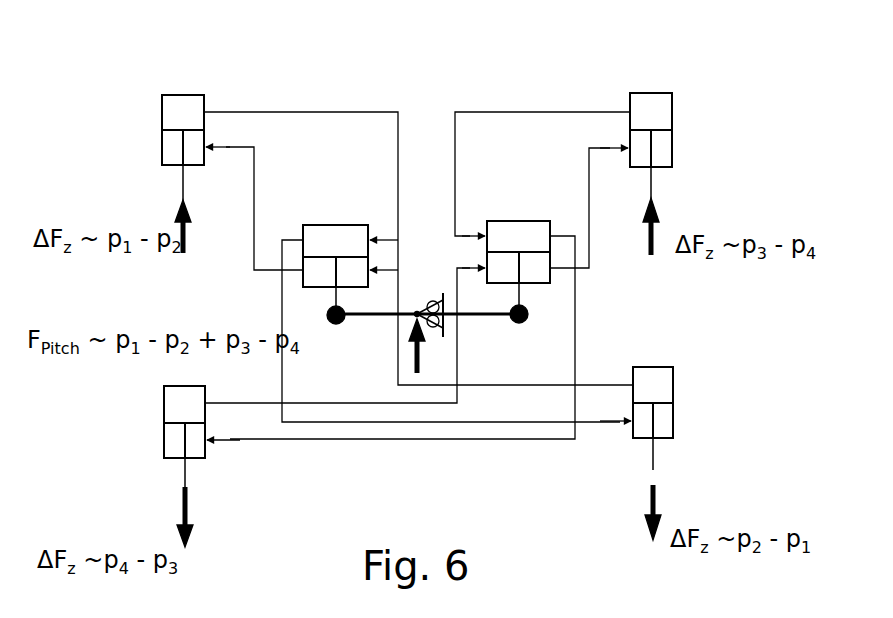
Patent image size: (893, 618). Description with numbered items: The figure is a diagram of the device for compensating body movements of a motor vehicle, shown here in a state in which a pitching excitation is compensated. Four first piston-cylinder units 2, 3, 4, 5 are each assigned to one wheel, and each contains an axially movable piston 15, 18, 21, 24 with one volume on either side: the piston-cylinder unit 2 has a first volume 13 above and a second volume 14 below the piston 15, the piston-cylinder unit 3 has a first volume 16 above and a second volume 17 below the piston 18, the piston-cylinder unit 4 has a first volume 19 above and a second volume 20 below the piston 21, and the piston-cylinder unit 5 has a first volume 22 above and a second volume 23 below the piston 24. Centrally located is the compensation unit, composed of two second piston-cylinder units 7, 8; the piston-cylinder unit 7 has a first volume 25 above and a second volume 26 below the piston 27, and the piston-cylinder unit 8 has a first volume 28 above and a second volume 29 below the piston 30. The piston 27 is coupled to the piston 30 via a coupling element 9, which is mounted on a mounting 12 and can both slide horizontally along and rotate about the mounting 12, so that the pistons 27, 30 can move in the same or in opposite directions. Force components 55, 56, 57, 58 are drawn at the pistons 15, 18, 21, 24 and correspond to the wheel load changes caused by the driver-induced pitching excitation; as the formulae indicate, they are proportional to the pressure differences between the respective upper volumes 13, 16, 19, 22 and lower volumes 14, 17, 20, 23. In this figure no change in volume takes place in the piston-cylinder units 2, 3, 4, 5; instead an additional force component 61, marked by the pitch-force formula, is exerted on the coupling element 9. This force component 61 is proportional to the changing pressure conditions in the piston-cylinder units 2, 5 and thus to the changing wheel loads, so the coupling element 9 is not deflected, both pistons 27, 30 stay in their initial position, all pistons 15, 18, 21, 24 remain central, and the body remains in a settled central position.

The first piston-cylinder unit 2 is at (640, 93).
The first piston-cylinder unit 3 is at (655, 367).
The first piston-cylinder unit 4 is at (178, 387).
The first piston-cylinder unit 5 is at (177, 95).
The second piston-cylinder unit 7 is at (313, 225).
The second piston-cylinder unit 8 is at (494, 221).
The coupling element 9 is at (472, 314).
The mounting 12 is at (441, 337).
The first volume 13 is at (655, 112).
The second volume 14 is at (662, 143).
The piston 15 is at (652, 176).
The first volume 16 is at (655, 383).
The second volume 17 is at (660, 416).
The piston 18 is at (653, 454).
The first volume 19 is at (176, 398).
The second volume 20 is at (176, 434).
The piston 21 is at (185, 466).
The first volume 22 is at (170, 103).
The second volume 23 is at (172, 122).
The piston 24 is at (183, 168).
The first volume 25 is at (336, 240).
The second volume 26 is at (316, 281).
The piston 27 is at (344, 323).
The first volume 28 is at (511, 232).
The second volume 29 is at (531, 270).
The piston 30 is at (525, 304).
The force component 55 is at (655, 227).
The force component 56 is at (656, 506).
The force component 57 is at (183, 508).
The force component 58 is at (178, 204).
The additional force component 61 is at (412, 345).